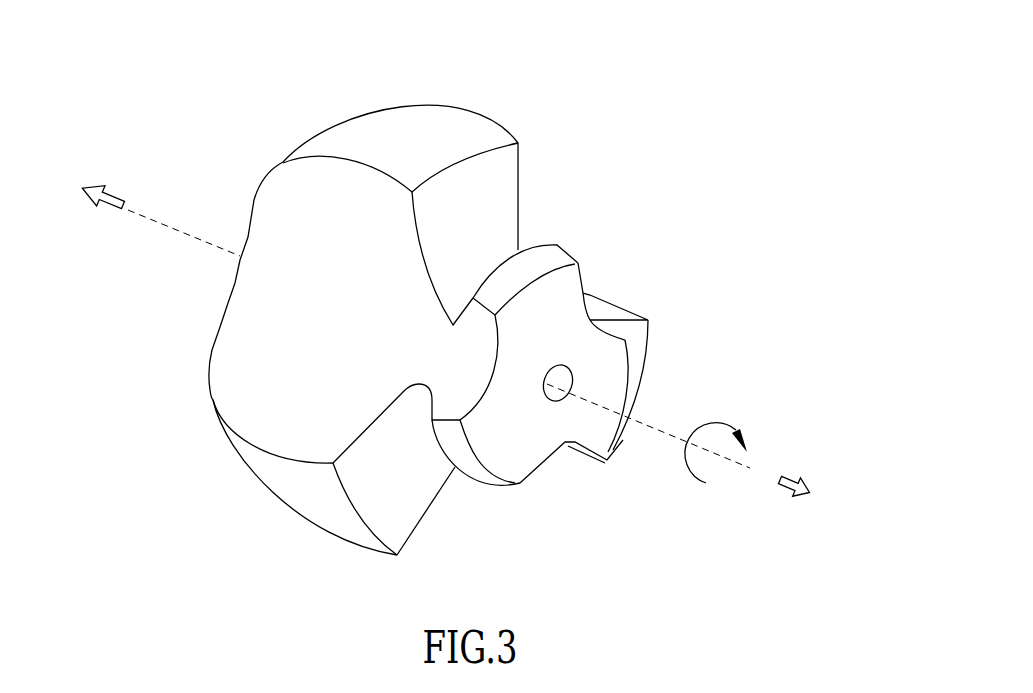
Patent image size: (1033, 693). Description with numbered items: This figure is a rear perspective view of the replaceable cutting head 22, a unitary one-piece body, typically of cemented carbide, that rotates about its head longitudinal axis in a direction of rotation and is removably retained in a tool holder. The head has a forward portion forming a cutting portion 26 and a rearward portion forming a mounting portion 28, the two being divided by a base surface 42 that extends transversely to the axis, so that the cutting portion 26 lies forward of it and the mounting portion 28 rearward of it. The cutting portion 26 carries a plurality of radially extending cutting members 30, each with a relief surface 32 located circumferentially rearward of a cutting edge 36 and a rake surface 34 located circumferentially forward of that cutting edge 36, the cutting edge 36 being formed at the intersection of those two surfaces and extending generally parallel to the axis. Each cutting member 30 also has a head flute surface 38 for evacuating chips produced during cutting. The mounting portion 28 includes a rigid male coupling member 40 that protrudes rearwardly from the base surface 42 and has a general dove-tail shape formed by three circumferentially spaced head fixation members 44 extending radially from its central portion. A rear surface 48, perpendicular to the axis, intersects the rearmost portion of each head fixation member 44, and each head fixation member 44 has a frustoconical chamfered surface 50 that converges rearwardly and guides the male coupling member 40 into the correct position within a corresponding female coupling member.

The replaceable cutting head 22 is at (645, 140).
The cutting portion 26 is at (198, 417).
The mounting portion 28 is at (602, 213).
The cutting member 30 is at (502, 117).
The relief surface 32 is at (350, 140).
The rake surface 34 is at (251, 425).
The cutting edge 36 is at (210, 385).
The head flute surface 38 is at (310, 420).
The male coupling member 40 is at (593, 268).
The base surface 42 is at (392, 493).
The head fixation member 44 is at (543, 237).
The rear surface 48 is at (560, 312).
The chamfered surface 50 is at (550, 260).